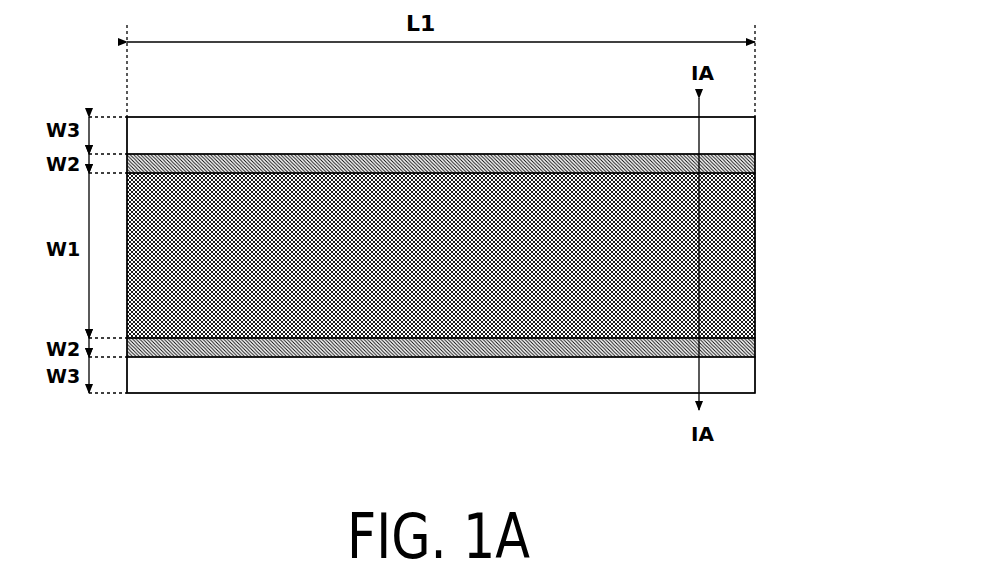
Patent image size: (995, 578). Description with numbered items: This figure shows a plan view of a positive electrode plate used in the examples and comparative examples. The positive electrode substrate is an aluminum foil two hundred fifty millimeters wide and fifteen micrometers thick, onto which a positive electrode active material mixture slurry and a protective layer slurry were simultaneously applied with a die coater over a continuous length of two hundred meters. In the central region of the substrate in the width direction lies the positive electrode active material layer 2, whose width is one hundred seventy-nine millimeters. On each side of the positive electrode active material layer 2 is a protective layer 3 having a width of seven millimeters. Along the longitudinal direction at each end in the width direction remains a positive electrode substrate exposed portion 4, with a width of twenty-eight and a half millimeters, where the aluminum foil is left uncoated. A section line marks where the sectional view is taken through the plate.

The positive electrode active material layer 2 is at (752, 210).
The protective layer 3 is at (747, 162).
The positive electrode substrate exposed portion 4 is at (722, 125).